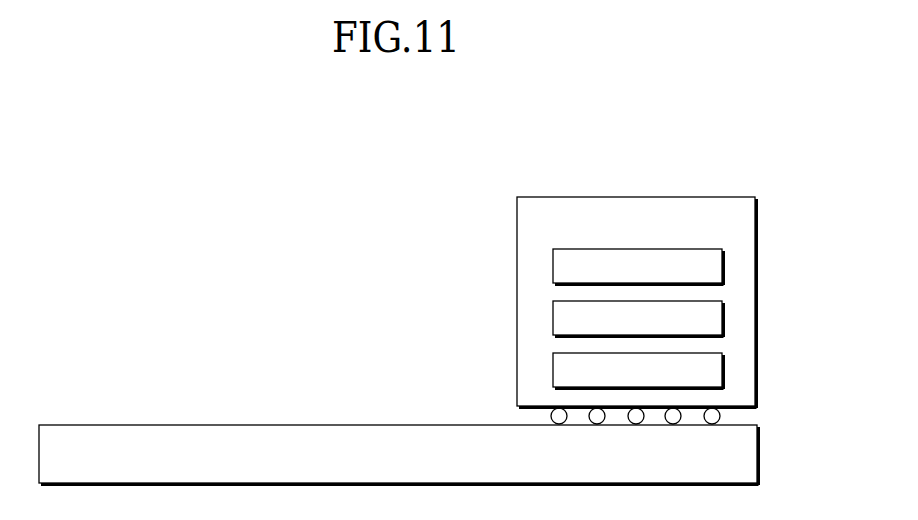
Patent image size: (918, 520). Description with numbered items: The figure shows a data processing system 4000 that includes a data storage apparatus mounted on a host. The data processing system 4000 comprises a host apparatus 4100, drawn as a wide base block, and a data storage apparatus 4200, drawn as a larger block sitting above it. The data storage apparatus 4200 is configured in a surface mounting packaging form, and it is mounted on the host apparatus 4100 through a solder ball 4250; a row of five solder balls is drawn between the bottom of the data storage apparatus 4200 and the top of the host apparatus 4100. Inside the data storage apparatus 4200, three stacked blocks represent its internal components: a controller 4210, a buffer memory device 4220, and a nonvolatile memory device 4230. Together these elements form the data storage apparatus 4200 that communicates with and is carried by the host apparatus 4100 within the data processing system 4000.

The data processing system 4000 is at (133, 163).
The host apparatus 4100 is at (399, 455).
The data storage apparatus 4200 is at (637, 302).
The controller 4210 is at (638, 267).
The buffer memory device 4220 is at (638, 319).
The nonvolatile memory device 4230 is at (638, 371).
The solder ball 4250 is at (733, 415).